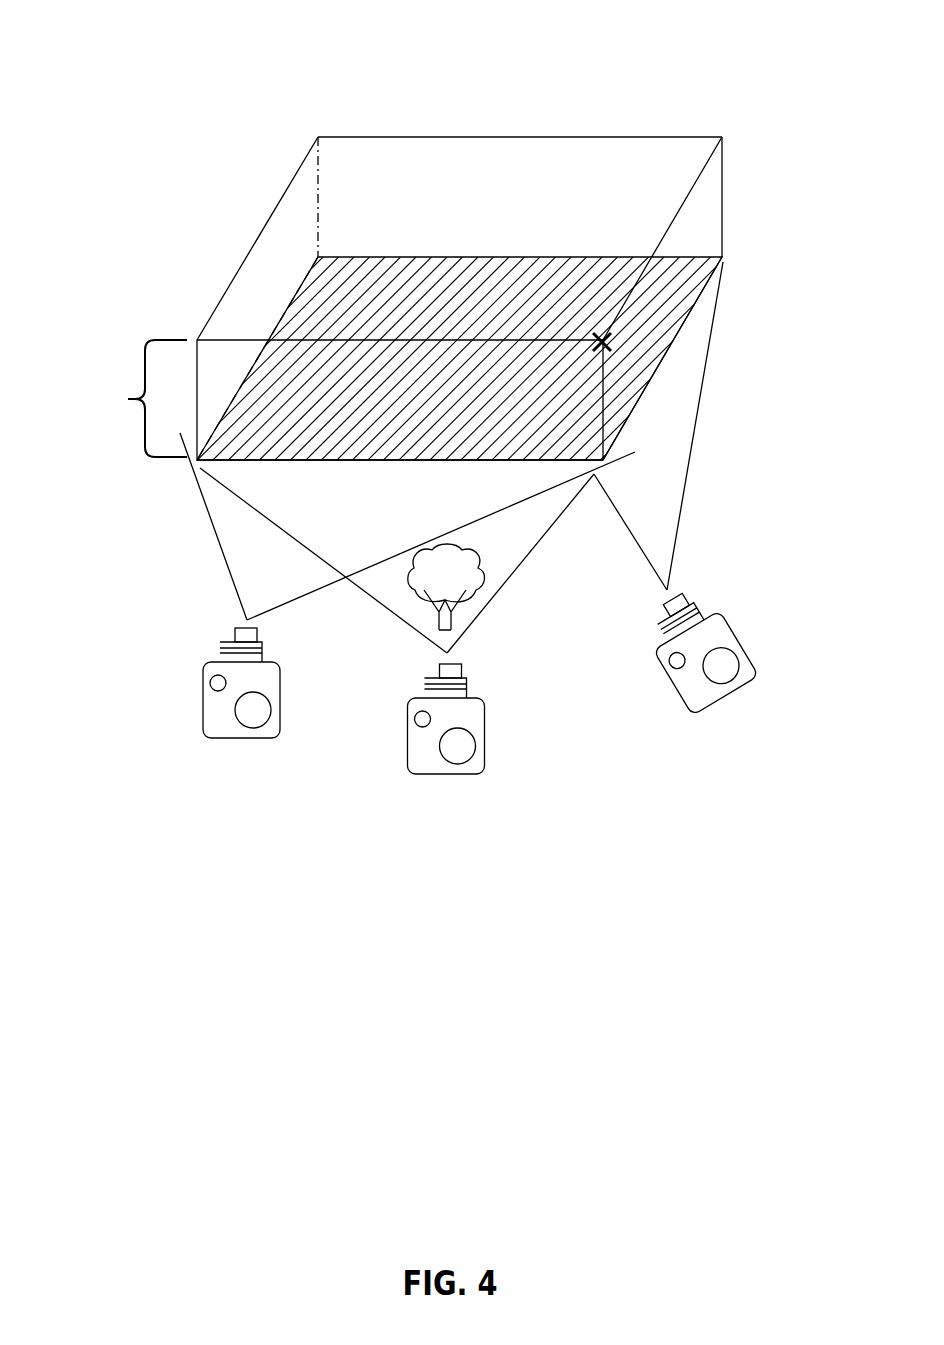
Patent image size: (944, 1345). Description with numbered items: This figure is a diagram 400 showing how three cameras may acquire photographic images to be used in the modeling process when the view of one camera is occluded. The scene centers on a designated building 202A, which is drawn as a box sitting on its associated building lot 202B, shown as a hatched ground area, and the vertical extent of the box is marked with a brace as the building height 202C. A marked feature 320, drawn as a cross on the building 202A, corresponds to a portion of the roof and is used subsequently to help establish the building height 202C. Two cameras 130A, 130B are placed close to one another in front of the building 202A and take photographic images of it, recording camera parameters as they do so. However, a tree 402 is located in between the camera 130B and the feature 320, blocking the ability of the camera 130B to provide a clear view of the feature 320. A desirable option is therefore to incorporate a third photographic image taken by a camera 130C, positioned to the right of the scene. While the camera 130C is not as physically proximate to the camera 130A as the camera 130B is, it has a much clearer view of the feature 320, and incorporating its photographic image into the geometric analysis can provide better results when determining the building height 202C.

The diagram of three cameras acquiring images with an occluded view 400 is at (849, 31).
The building 202A is at (318, 138).
The building lot 202B is at (623, 417).
The building height 202C is at (113, 398).
The feature 320 is at (606, 346).
The tree 402 is at (478, 588).
The camera 130A is at (232, 744).
The camera 130B is at (438, 782).
The camera 130C is at (667, 713).